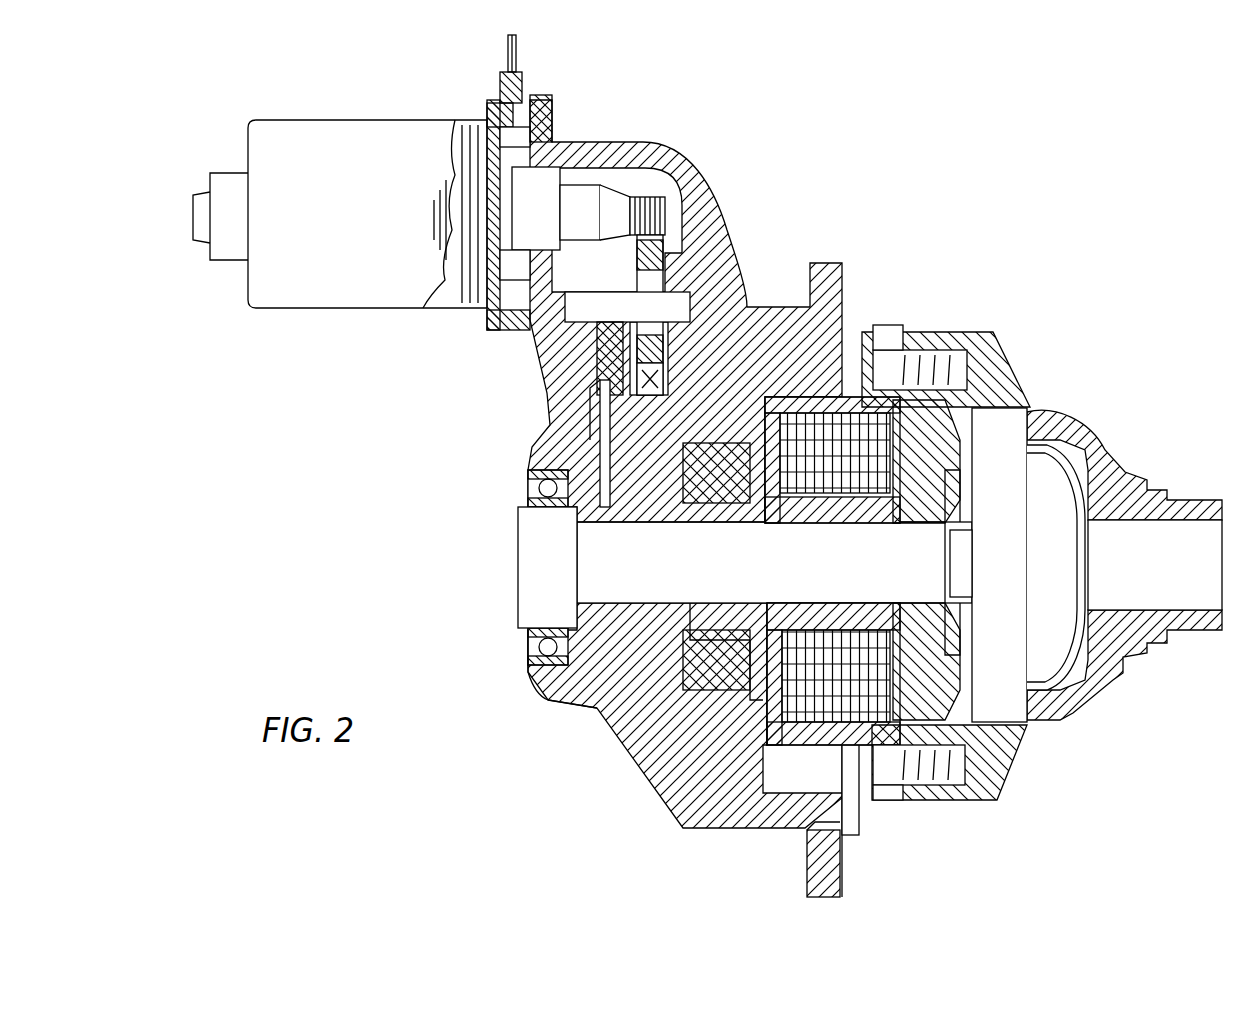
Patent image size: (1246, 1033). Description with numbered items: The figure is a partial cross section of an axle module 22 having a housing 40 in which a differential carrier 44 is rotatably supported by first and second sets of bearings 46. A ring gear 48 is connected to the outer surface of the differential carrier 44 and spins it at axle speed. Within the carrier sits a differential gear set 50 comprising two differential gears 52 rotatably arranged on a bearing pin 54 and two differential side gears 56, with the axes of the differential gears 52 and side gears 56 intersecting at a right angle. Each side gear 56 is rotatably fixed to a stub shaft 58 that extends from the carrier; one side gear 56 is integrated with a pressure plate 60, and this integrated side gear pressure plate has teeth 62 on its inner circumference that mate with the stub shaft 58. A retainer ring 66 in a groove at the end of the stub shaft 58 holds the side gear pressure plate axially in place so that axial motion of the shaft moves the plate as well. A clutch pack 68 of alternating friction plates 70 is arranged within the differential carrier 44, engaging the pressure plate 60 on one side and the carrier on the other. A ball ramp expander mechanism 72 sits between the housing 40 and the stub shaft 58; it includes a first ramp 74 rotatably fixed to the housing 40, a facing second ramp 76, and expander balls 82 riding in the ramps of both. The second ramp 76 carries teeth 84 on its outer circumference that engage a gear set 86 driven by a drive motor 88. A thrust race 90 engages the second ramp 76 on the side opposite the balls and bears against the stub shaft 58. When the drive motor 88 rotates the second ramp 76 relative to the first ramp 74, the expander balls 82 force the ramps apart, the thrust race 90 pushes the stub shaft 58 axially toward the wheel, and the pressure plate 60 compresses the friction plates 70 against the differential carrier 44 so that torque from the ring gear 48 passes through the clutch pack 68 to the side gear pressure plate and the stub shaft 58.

The axle module 22 is at (440, 430).
The housing 40 is at (647, 735).
The differential carrier 44 is at (1080, 435).
The bearings 46 is at (842, 330).
The ring gear 48 is at (1010, 355).
The differential gear set 50 is at (1003, 420).
The differential gears 52 is at (1055, 423).
The bearing pin 54 is at (997, 543).
The differential side gear 56 is at (995, 363).
The stub shaft 58 is at (597, 590).
The pressure plate 60 is at (948, 477).
The teeth 62 is at (783, 525).
The retainer ring 66 is at (983, 607).
The clutch pack 68 is at (847, 413).
The friction plates 70 is at (975, 705).
The ball ramp expander mechanism 72 is at (565, 702).
The first ramp 74 is at (700, 312).
The second ramp 76 is at (590, 478).
The expander balls 82 is at (530, 667).
The teeth 84 is at (597, 335).
The gear set 86 is at (668, 302).
The drive motor 88 is at (322, 287).
The thrust race 90 is at (530, 470).